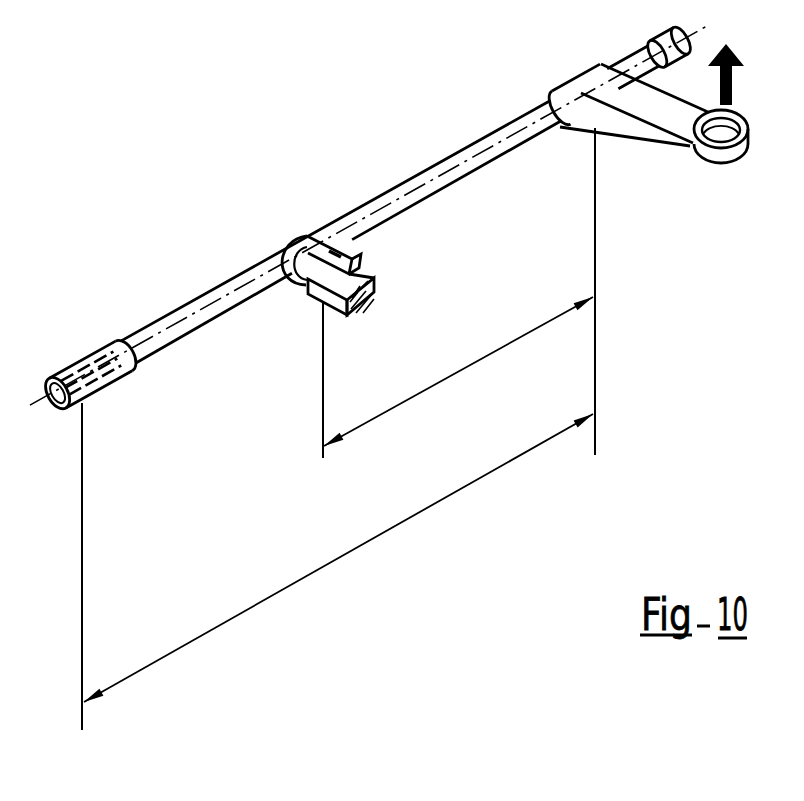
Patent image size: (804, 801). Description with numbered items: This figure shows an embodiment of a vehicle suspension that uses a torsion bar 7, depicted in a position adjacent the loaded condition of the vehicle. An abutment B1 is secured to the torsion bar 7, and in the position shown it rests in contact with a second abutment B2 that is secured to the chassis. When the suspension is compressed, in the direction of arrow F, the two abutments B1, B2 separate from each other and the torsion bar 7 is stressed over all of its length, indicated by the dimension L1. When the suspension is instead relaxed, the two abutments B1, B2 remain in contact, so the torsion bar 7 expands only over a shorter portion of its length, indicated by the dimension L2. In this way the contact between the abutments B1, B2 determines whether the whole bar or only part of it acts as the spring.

The torsion bar 7 is at (440, 163).
The abutment secured to the bar B1 is at (352, 257).
The abutment secured to the chassis B2 is at (374, 291).
The arrow F is at (739, 74).
The full length of torsion bar L1 is at (338, 558).
The portion of torsion bar length L2 is at (458, 371).